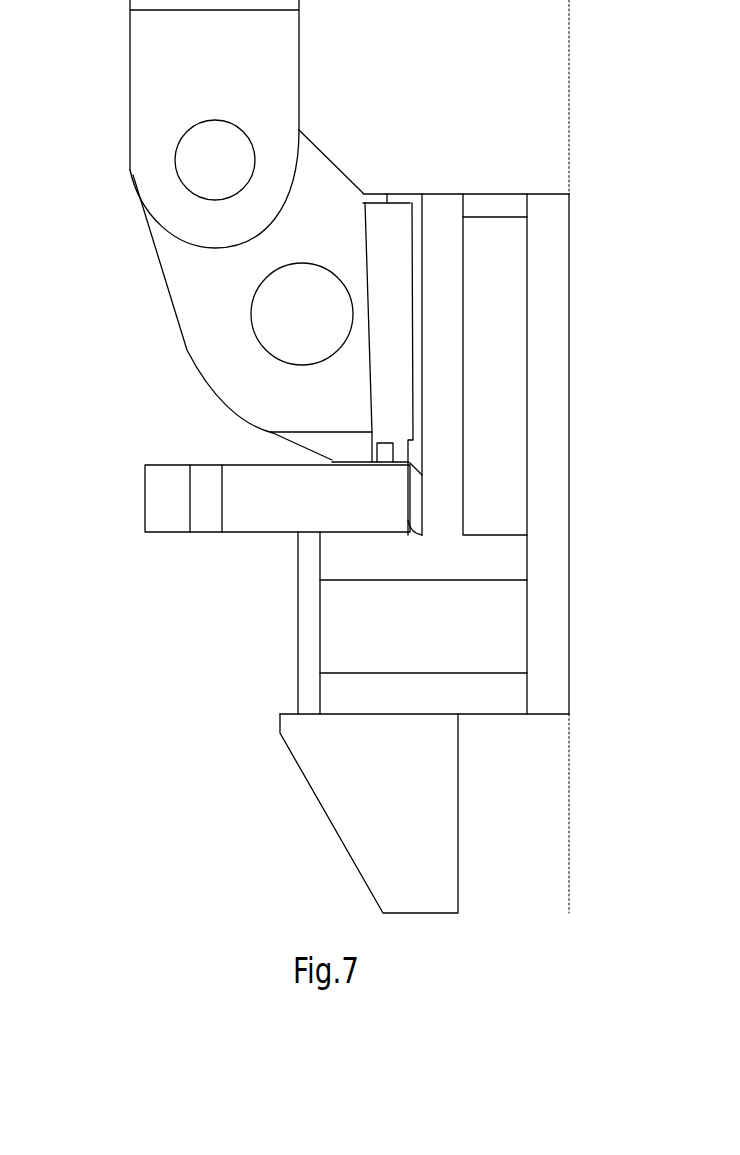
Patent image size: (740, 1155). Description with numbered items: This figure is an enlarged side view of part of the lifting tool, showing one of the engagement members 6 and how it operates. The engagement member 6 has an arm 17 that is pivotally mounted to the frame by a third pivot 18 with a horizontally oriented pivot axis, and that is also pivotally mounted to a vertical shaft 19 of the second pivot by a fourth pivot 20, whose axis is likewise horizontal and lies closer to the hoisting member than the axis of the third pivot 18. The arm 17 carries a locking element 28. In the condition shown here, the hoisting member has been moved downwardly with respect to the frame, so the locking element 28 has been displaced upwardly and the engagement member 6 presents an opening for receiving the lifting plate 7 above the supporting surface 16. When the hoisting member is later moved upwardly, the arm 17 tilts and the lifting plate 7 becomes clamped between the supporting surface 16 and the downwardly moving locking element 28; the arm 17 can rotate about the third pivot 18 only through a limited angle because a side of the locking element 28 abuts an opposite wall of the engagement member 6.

The engagement member 6 is at (569, 440).
The lifting plate 7 is at (257, 473).
The supporting surface 16 is at (307, 530).
The arm 17 is at (310, 173).
The third pivot 18 is at (268, 317).
The vertical shaft 19 is at (273, 52).
The fourth pivot 20 is at (198, 150).
The locking element 28 is at (397, 373).